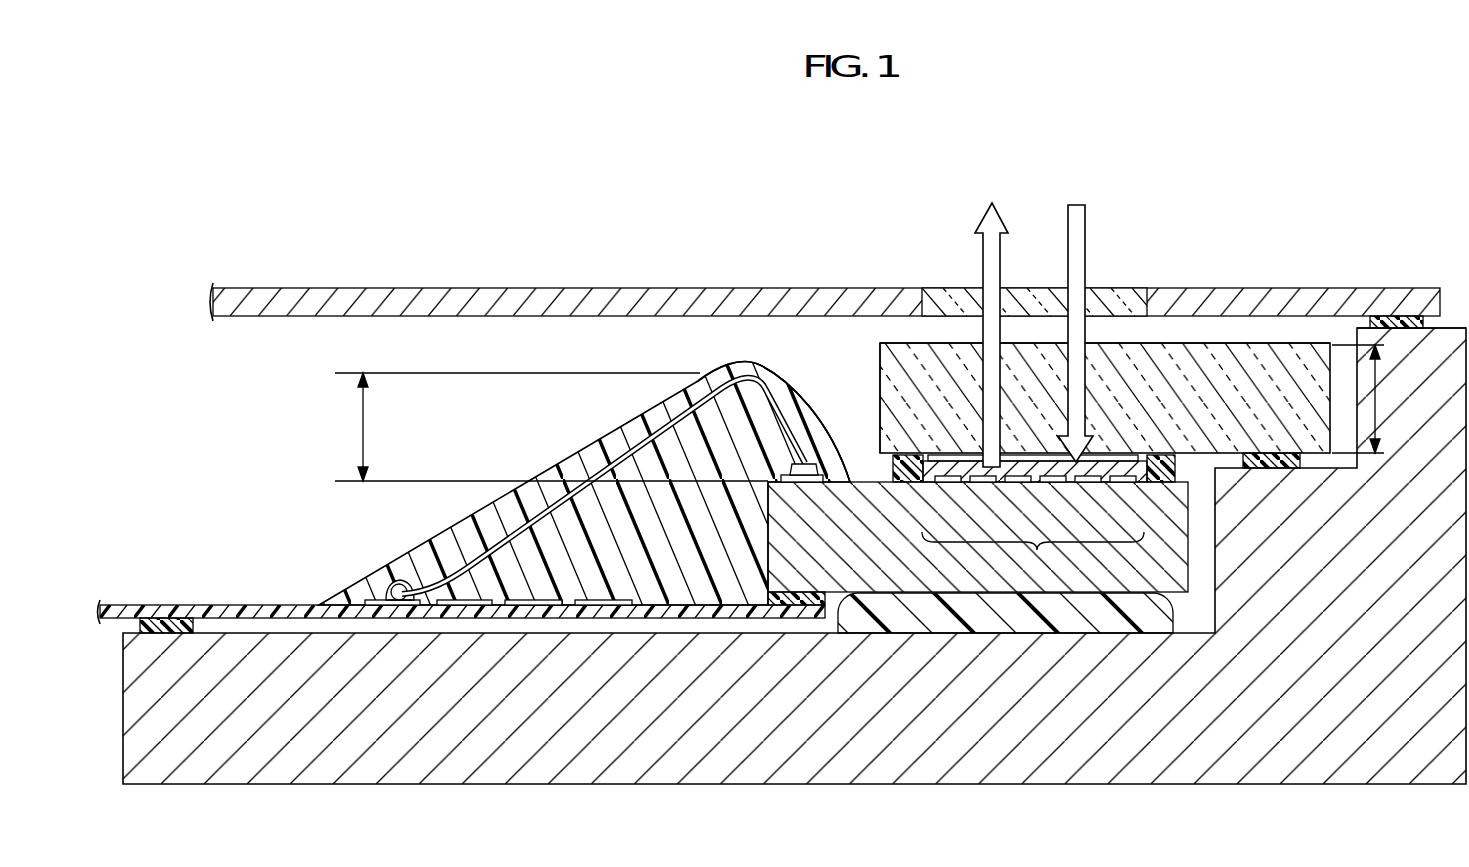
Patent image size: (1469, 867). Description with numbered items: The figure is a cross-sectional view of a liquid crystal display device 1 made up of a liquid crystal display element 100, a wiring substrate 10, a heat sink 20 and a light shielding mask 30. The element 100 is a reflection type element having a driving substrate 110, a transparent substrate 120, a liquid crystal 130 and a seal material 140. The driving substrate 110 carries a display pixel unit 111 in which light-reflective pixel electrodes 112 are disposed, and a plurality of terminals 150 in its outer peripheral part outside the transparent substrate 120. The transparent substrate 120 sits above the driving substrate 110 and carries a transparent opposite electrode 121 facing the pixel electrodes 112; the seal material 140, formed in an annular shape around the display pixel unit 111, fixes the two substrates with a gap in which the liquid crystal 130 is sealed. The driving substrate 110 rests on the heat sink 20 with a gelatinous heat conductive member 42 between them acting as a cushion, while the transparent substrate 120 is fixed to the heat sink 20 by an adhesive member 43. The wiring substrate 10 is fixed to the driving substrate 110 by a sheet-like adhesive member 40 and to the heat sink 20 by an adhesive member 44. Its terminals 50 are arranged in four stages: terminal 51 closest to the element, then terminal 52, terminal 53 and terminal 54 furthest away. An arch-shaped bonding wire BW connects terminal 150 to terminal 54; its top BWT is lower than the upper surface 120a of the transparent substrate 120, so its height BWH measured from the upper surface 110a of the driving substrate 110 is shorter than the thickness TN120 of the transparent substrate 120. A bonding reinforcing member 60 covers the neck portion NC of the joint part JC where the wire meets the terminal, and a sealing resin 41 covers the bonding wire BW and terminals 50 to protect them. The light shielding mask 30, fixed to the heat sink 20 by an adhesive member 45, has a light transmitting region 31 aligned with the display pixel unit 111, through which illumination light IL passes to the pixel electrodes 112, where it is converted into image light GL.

The liquid crystal display device 1 is at (1438, 216).
The wiring substrate 10 is at (118, 605).
The heat sink 20 is at (200, 784).
The light shielding mask 30 is at (590, 288).
The light transmitting region 31 is at (1112, 288).
The adhesive member 40 is at (797, 618).
The sealing resin 41 is at (538, 474).
The gelatinous heat conductive member 42 is at (980, 633).
The adhesive member 43 is at (1272, 453).
The adhesive member 44 is at (170, 618).
The adhesive member 45 is at (1395, 316).
The terminal 50 is at (532, 644).
The terminal 51 is at (605, 607).
The terminal 52 is at (535, 607).
The terminal 53 is at (470, 607).
The terminal 54 is at (400, 607).
The bonding reinforcing member 60 is at (408, 584).
The liquid crystal display element 100 is at (1243, 343).
The driving substrate 110 is at (1190, 550).
The upper surface of the driving substrate 110a is at (848, 472).
The display pixel unit 111 is at (1033, 559).
The pixel electrode 112 is at (1120, 484).
The transparent substrate 120 is at (1297, 348).
The upper surface of the transparent substrate 120a is at (888, 343).
The opposite electrode 121 is at (1128, 464).
The liquid crystal 130 is at (957, 456).
The seal material 140 is at (905, 483).
The terminal 150 is at (803, 483).
The bonding wire BW is at (632, 440).
The top of the bonding wire BWT is at (771, 366).
The height of the bonding wire BWH is at (535, 427).
The thickness of the transparent substrate TN120 is at (1400, 399).
The neck portion NC is at (394, 594).
The joint part JC is at (392, 600).
The image light GL is at (994, 318).
The illumination light IL is at (1075, 315).